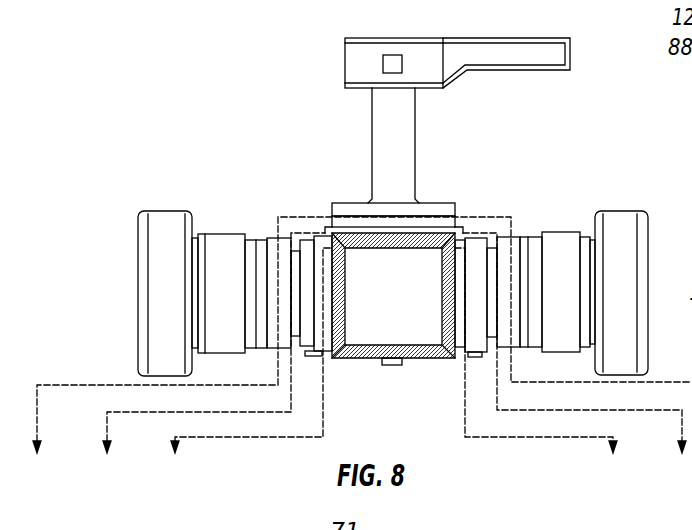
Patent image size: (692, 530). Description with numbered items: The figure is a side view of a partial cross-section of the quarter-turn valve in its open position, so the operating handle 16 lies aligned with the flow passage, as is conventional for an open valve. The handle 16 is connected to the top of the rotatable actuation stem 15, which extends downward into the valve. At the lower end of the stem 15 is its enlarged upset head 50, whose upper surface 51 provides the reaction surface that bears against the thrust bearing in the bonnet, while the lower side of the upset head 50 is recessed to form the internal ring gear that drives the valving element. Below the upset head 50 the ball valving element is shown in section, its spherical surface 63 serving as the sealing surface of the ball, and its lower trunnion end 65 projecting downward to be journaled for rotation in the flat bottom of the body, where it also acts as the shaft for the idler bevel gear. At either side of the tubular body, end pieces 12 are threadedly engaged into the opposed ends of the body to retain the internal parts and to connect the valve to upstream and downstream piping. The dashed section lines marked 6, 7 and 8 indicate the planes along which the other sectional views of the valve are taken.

The section line 6- 6 is at (359, 354).
The section line 7- 7 is at (396, 362).
The section line 8- 8 is at (394, 370).
The end piece 12 is at (634, 269).
The actuation stem 15 is at (355, 145).
The operating handle 16 is at (457, 74).
The upset head 50 is at (427, 203).
The upper surface 51 is at (370, 188).
The spherical surface 63 is at (409, 310).
The lower trunnion end 65 is at (373, 400).